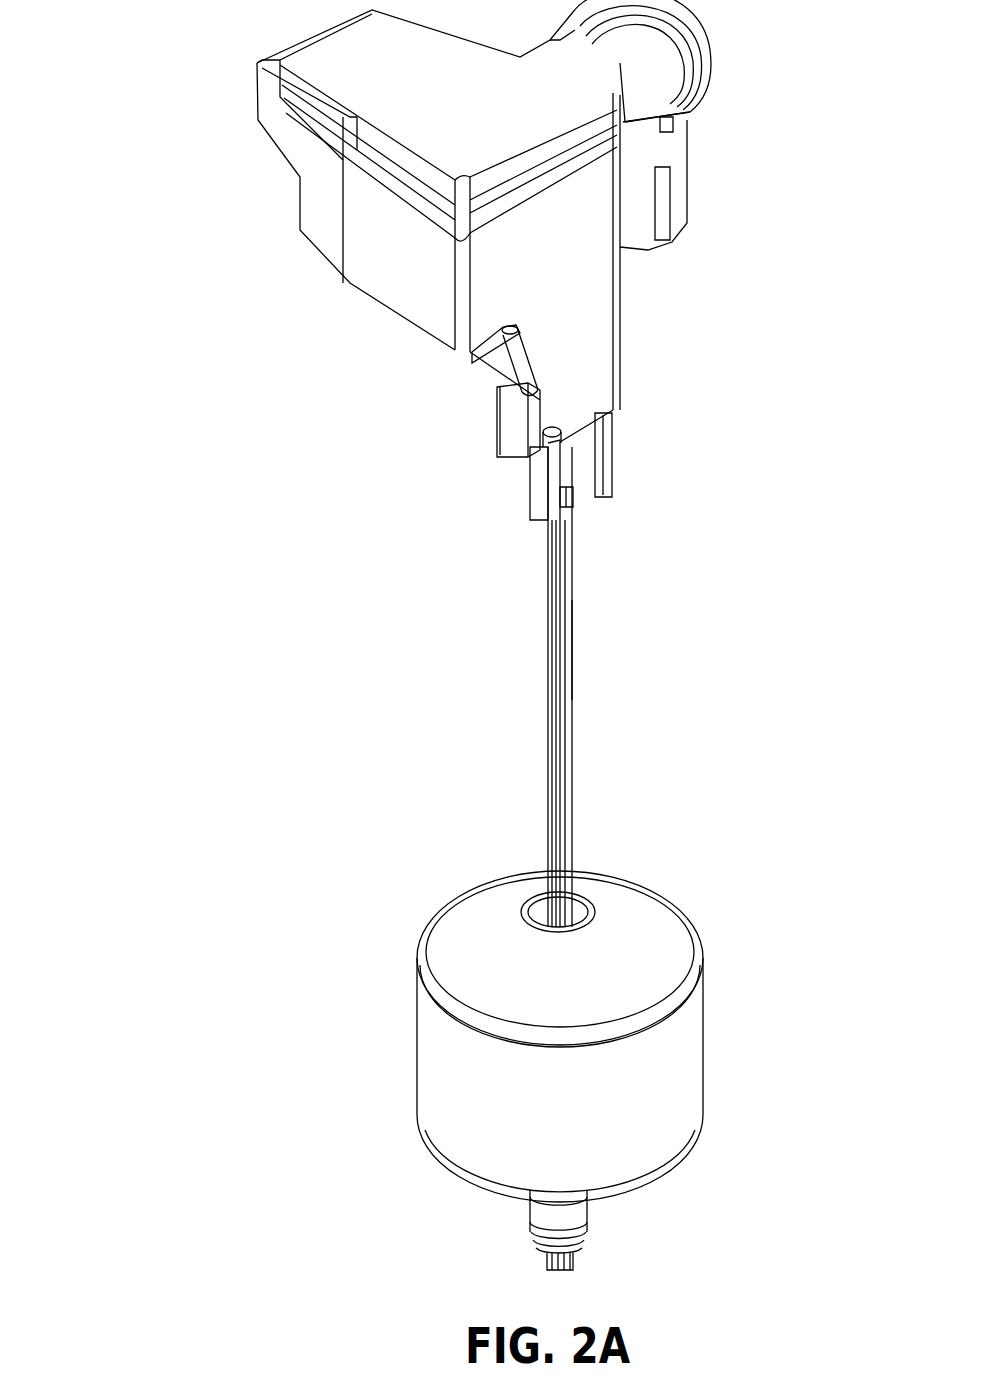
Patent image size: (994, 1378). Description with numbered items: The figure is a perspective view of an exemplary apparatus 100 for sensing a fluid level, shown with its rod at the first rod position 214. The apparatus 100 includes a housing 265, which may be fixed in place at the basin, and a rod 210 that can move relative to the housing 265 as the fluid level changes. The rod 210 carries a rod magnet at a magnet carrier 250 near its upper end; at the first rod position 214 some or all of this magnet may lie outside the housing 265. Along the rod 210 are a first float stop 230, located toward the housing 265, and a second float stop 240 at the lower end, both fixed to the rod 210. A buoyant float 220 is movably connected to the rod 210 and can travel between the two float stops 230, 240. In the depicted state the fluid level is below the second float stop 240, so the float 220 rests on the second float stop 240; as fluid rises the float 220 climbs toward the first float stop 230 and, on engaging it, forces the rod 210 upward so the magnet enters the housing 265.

The apparatus 100 is at (168, 362).
The housing 265 is at (578, 302).
The magnet carrier 250 is at (572, 455).
The first float stop 230 is at (577, 497).
The rod 210 is at (558, 772).
The first rod position 214 is at (631, 717).
The float 220 is at (447, 1083).
The second float stop 240 is at (538, 1220).